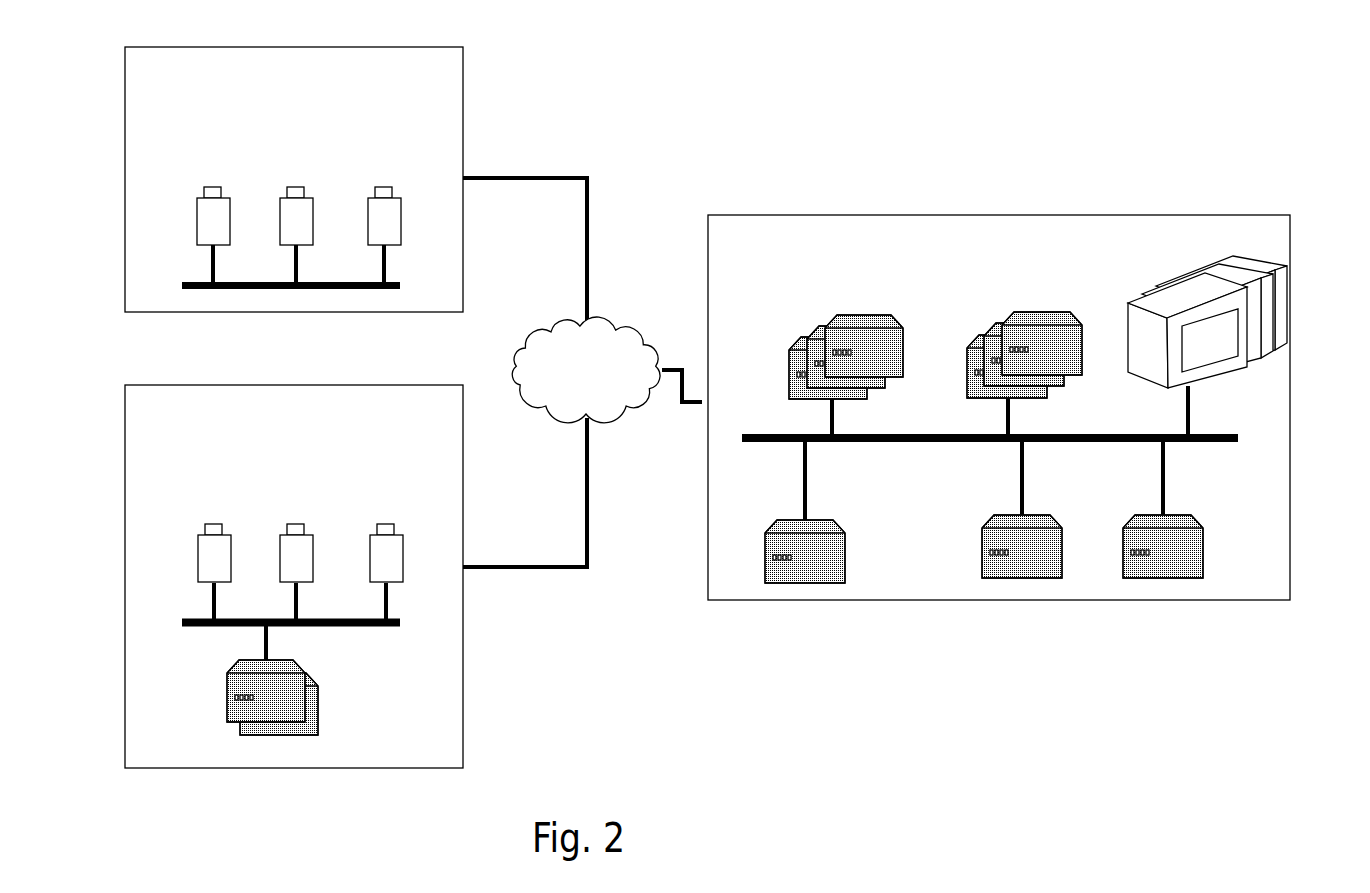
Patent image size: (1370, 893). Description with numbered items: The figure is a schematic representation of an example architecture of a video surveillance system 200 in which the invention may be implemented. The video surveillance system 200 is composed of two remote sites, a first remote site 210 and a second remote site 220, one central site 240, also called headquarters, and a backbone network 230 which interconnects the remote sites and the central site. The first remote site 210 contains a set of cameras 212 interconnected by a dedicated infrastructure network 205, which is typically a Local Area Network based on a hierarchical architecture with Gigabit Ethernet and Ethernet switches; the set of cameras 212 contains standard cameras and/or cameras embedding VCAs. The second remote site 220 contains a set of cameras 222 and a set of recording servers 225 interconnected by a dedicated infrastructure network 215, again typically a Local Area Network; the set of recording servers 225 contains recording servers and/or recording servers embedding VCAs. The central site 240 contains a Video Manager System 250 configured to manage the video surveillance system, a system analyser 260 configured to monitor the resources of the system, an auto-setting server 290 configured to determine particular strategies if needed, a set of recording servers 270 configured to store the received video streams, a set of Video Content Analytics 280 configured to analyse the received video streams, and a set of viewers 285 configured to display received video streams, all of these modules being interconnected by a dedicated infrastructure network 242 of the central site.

The video surveillance system 200 is at (1279, 86).
The dedicated infrastructure network 205 is at (192, 282).
The first remote site 210 is at (463, 130).
The set of cameras 212 is at (203, 175).
The dedicated infrastructure network 215 is at (375, 627).
The second remote site 220 is at (463, 698).
The set of cameras 222 is at (203, 512).
The set of recording servers 225 is at (320, 722).
The backbone network 230 is at (571, 379).
The central site 240 is at (1172, 215).
The dedicated infrastructure network 242 is at (877, 443).
The Video Manager System 250 is at (845, 570).
The system analyser 260 is at (980, 552).
The set of recording servers 270 is at (822, 327).
The set of Video Content Analytics 280 is at (1000, 325).
The set of viewers 285 is at (1143, 298).
The auto-setting server 290 is at (1203, 560).